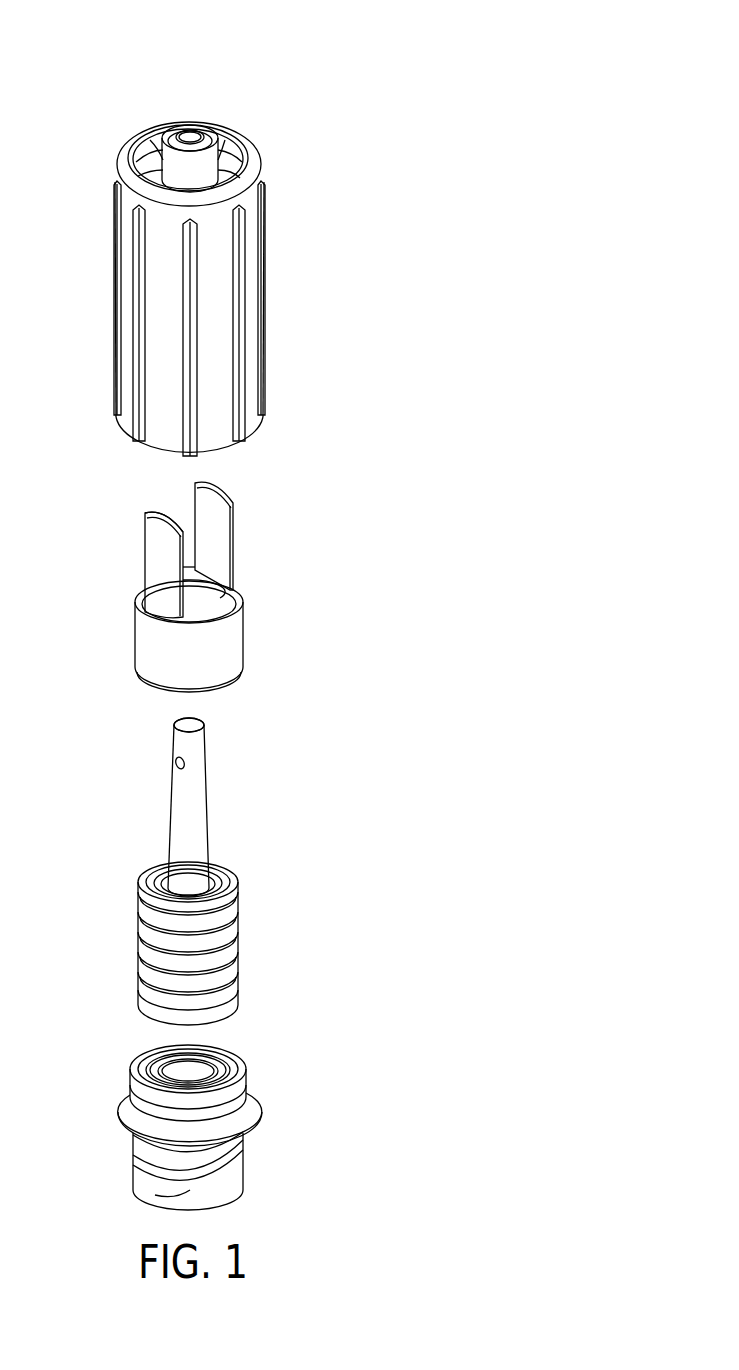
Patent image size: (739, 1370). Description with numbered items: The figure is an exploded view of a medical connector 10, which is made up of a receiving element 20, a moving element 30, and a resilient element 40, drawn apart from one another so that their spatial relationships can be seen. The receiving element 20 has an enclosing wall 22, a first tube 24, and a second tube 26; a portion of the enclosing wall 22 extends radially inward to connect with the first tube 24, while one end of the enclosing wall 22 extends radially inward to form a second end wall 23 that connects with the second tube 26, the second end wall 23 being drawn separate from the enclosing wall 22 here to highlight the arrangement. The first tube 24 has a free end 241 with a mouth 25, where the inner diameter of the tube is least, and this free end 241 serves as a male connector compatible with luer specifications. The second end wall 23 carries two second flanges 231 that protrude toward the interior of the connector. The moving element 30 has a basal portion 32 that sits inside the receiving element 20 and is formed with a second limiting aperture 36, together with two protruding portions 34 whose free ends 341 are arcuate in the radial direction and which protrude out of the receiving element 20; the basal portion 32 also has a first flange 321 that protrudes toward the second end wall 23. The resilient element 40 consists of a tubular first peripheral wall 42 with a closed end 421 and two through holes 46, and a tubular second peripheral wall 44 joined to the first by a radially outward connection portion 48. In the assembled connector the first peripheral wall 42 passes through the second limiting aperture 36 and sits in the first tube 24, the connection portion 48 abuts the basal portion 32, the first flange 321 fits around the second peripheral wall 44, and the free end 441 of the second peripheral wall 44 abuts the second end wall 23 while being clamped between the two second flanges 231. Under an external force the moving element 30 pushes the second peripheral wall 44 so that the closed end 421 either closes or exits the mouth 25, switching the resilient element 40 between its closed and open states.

The medical connector 10 is at (387, 107).
The receiving element 20 is at (267, 160).
The enclosing wall 22 is at (228, 360).
The second end wall 23 is at (247, 1110).
The second flanges 231 is at (153, 1062).
The first tube 24 is at (202, 177).
The free end 241 is at (163, 140).
The mouth 25 is at (189, 135).
The second tube 26 is at (167, 1197).
The moving element 30 is at (259, 560).
The basal portion 32 is at (217, 645).
The first flange 321 is at (232, 682).
The protruding portions 34 is at (158, 558).
The free end 341 is at (148, 515).
The second limiting aperture 36 is at (203, 600).
The resilient element 40 is at (253, 865).
The first peripheral wall 42 is at (197, 797).
The closed end 421 is at (192, 723).
The second peripheral wall 44 is at (160, 957).
The free end 441 is at (220, 1013).
The through holes 46 is at (175, 762).
The connection portion 48 is at (160, 880).